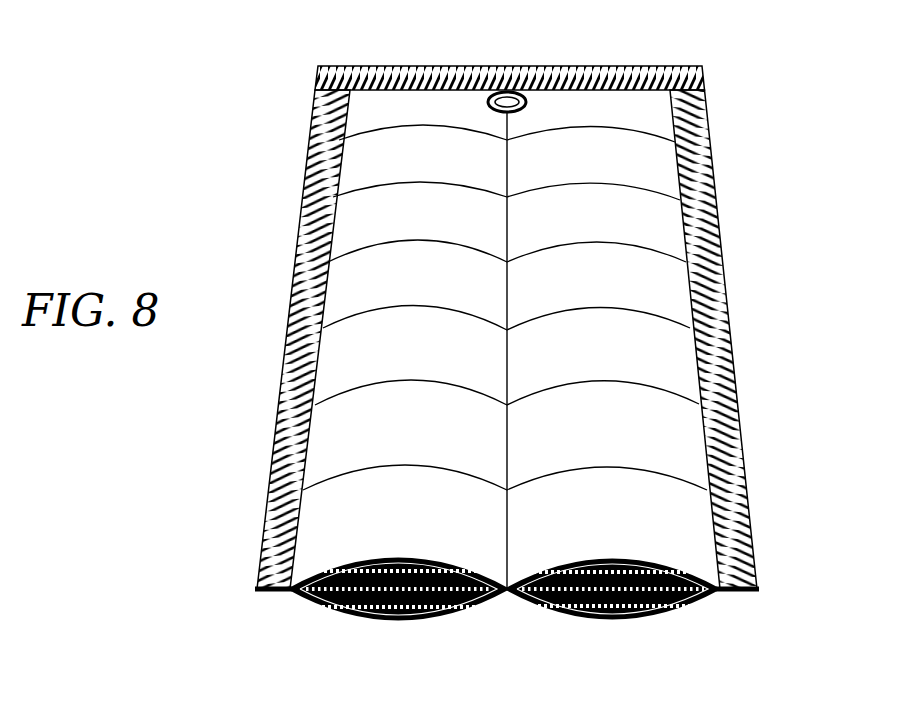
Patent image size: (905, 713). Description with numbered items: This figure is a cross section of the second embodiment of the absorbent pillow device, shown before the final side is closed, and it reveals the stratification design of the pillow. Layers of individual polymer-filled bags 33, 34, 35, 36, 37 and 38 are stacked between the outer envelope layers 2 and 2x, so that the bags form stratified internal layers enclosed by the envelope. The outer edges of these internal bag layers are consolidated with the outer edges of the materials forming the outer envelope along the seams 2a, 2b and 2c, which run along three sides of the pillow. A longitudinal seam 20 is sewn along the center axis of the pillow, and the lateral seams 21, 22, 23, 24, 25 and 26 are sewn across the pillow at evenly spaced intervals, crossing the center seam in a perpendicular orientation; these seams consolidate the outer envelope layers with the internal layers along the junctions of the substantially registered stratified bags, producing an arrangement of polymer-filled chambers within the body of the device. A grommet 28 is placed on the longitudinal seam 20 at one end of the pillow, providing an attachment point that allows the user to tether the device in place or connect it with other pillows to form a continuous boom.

The envelope 2 is at (697, 578).
The seam 2a is at (309, 190).
The seam 2b is at (462, 66).
The seam 2c is at (716, 190).
The outer envelope layer 2x is at (532, 605).
The longitudinal seam 20 is at (503, 598).
The lateral seam 21 is at (383, 128).
The lateral seam 22 is at (380, 185).
The lateral seam 23 is at (375, 245).
The lateral seam 24 is at (370, 312).
The lateral seam 25 is at (365, 387).
The lateral seam 26 is at (355, 472).
The grommet 28 is at (527, 101).
The polymer-filled bag 33 is at (328, 615).
The polymer-filled bag 34 is at (363, 614).
The polymer-filled bag 35 is at (408, 612).
The polymer-filled bag 36 is at (653, 613).
The polymer-filled bag 37 is at (612, 597).
The polymer-filled bag 38 is at (570, 612).